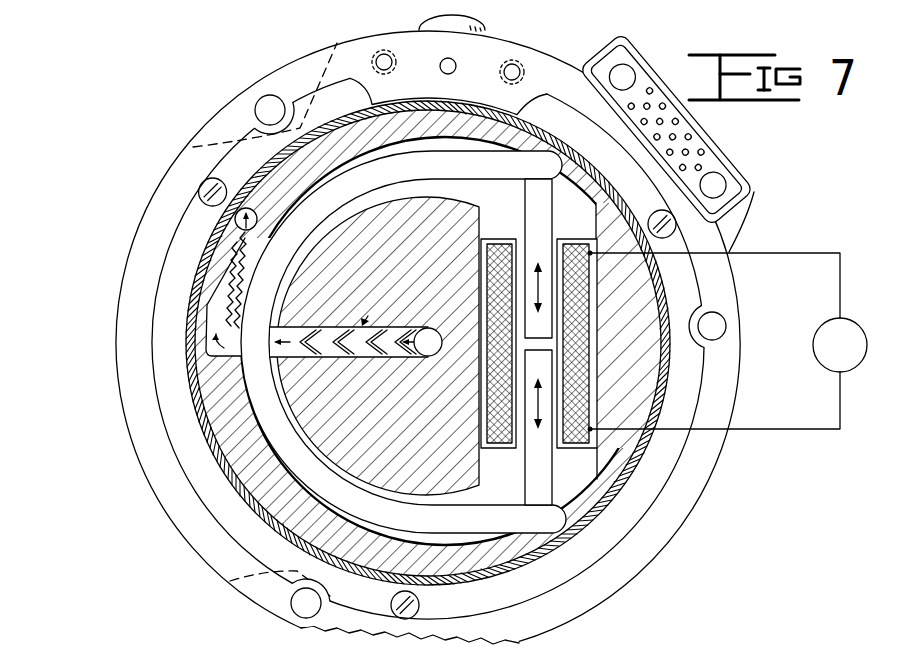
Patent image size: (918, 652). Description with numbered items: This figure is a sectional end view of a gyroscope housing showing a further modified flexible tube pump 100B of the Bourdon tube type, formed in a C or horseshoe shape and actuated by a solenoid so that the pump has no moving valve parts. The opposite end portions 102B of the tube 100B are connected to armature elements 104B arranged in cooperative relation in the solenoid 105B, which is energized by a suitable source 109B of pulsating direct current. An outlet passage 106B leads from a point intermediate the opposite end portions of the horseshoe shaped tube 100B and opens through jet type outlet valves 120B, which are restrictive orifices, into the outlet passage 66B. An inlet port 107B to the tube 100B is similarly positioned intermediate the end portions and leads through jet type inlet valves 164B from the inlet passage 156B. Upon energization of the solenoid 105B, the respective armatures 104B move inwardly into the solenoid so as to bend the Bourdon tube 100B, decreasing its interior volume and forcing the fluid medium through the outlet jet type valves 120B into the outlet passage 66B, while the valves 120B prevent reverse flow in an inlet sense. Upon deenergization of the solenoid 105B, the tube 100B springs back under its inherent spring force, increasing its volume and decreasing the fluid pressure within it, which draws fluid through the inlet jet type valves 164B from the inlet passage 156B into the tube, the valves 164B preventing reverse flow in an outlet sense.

The flexible tube pump 100B is at (305, 488).
The end portions 102B is at (548, 150).
The armature elements 104B is at (524, 200).
The solenoid 105B is at (590, 320).
The outlet passage 106B is at (205, 383).
The inlet port 107B is at (325, 300).
The source of pulsating direct current 109B is at (832, 362).
The jet type outlet valves 120B is at (215, 290).
The inlet passage 156B is at (430, 358).
The jet type inlet valves 164B is at (468, 278).
The outlet passage 66B is at (238, 220).